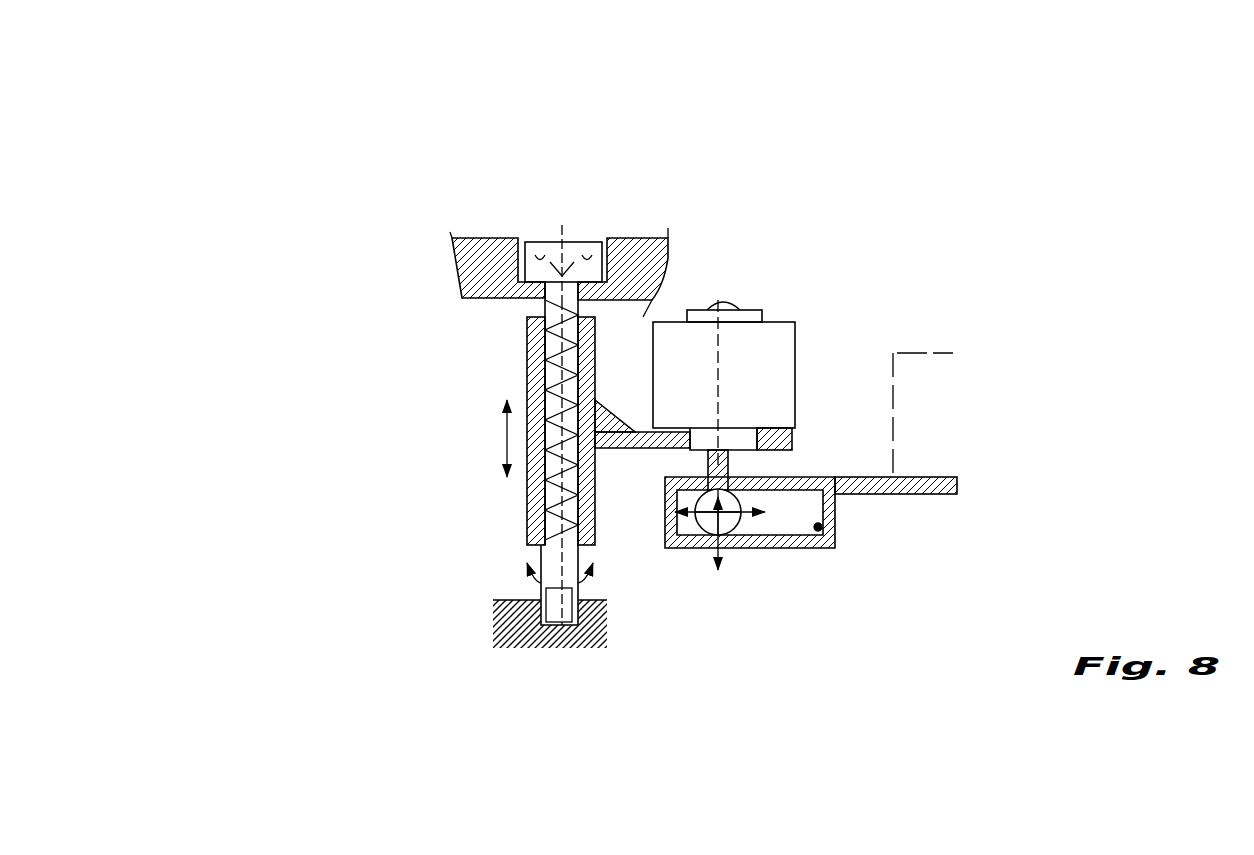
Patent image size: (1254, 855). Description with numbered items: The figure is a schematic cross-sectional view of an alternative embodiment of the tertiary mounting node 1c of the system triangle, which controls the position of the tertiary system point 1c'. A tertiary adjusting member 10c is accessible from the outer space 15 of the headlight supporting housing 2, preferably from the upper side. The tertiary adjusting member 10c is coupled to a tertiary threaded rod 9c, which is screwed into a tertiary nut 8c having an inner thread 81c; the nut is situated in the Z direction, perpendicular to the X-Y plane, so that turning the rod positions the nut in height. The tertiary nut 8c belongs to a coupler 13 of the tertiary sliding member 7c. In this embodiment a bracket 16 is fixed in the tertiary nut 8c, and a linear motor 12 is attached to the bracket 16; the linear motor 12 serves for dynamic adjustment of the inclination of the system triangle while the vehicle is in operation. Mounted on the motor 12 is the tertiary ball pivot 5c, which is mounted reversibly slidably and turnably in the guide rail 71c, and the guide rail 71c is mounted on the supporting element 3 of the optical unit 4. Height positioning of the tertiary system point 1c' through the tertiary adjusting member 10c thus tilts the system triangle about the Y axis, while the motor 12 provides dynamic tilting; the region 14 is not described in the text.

The tertiary mounting node 1c is at (646, 401).
The tertiary system point 1c' is at (854, 614).
The supporting housing 2 is at (492, 270).
The supporting element 3 is at (957, 483).
The optical unit 4 is at (897, 353).
The tertiary ball pivot 5c is at (697, 523).
The tertiary sliding member 7c is at (660, 527).
The tertiary nut 8c is at (527, 485).
The tertiary threaded rod 9c is at (545, 310).
The tertiary adjusting member 10c is at (547, 238).
The linear motor 12 is at (782, 318).
The coupler 13 is at (288, 383).
The guide gap 14 is at (625, 323).
The outer space 15 is at (599, 218).
The bracket 16 is at (640, 450).
The guide rail 71c is at (818, 527).
The inner thread 81c is at (562, 363).